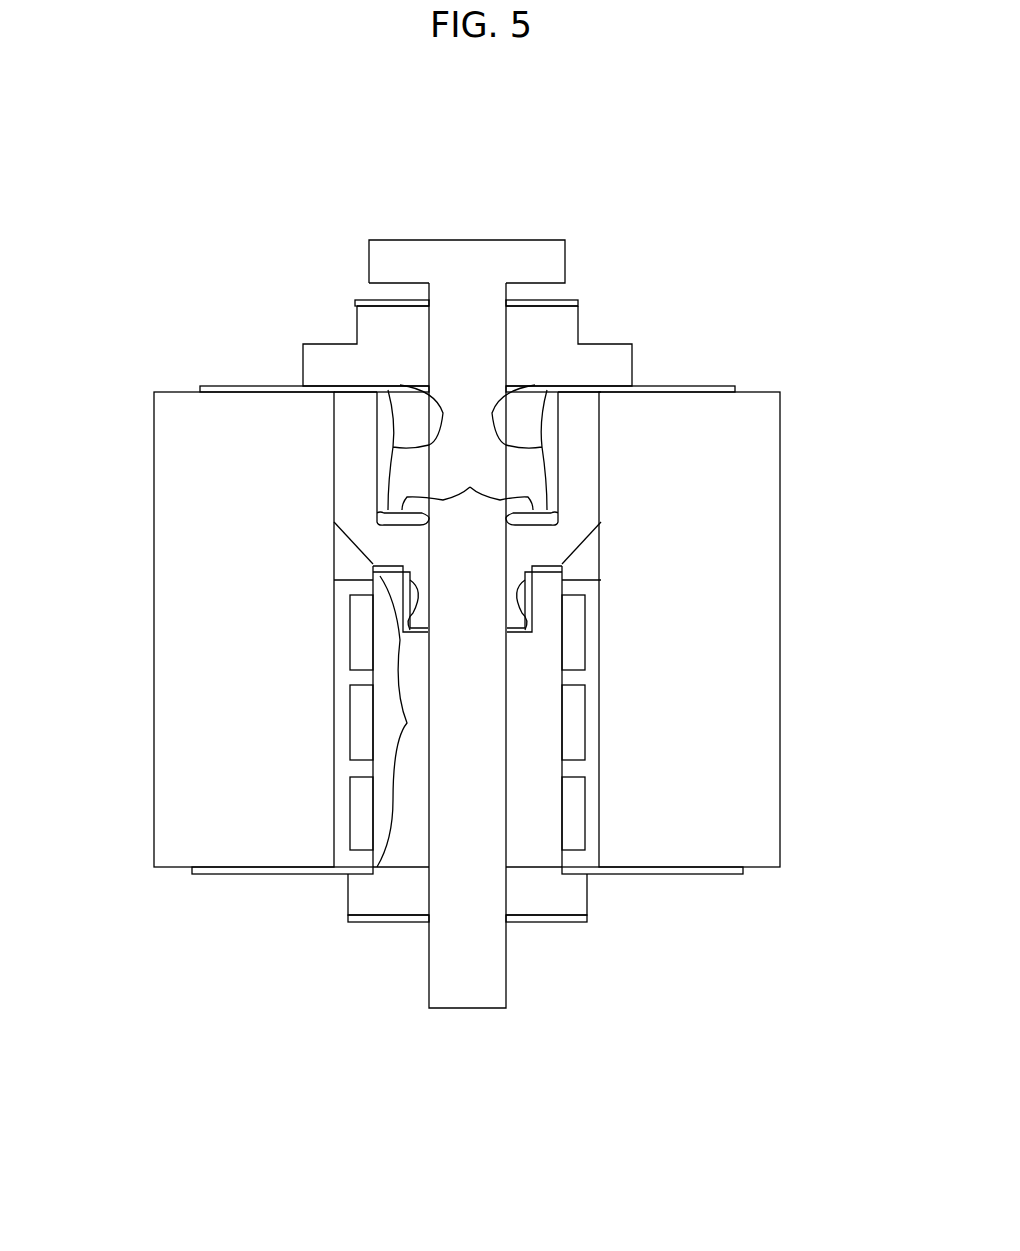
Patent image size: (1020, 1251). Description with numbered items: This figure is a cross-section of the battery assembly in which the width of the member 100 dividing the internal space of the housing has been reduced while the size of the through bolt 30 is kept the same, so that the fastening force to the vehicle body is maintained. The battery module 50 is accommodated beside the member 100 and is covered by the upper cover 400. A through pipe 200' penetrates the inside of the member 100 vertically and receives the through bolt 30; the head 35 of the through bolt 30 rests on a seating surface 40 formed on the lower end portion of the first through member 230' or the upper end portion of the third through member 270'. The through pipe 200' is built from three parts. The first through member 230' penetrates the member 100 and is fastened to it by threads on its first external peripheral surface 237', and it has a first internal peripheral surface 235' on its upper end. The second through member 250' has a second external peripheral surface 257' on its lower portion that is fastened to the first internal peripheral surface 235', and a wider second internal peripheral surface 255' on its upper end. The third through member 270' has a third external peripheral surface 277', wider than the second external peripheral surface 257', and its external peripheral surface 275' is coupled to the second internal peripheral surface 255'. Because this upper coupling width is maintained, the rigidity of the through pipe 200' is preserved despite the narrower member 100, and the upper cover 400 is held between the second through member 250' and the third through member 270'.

The through bolt 30 is at (565, 262).
The head 35 is at (432, 238).
The seating surface 40 is at (578, 303).
The battery module 50 is at (757, 710).
The member 100 is at (597, 860).
The through pipe 200' is at (573, 989).
The first through member 230' is at (435, 959).
The first internal peripheral surface 235' is at (646, 624).
The first external peripheral surface 237' is at (648, 721).
The second through member 250' is at (472, 629).
The second internal peripheral surface 255' is at (472, 537).
The second external peripheral surface 257' is at (474, 596).
The third through member 270' is at (501, 340).
The external peripheral surface 275' is at (475, 321).
The third external peripheral surface 277' is at (477, 419).
The upper cover 400 is at (735, 383).